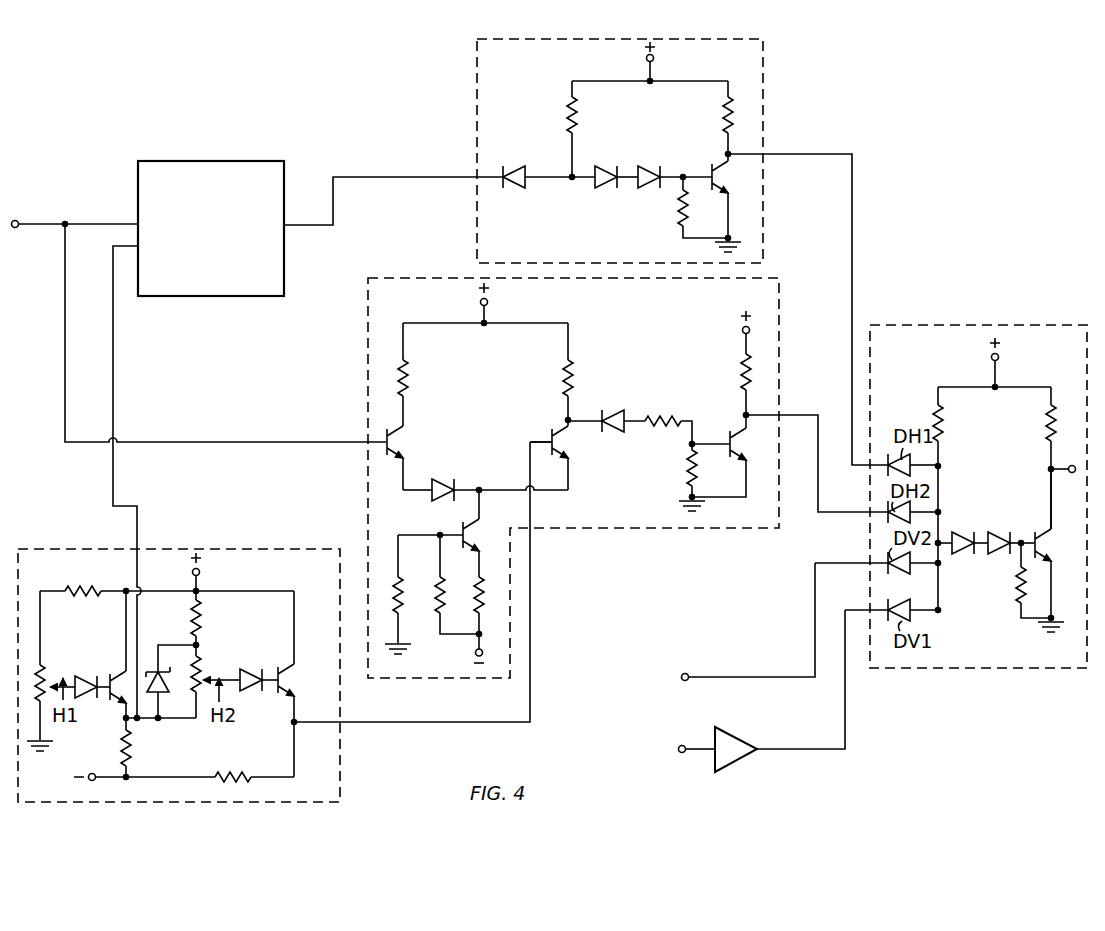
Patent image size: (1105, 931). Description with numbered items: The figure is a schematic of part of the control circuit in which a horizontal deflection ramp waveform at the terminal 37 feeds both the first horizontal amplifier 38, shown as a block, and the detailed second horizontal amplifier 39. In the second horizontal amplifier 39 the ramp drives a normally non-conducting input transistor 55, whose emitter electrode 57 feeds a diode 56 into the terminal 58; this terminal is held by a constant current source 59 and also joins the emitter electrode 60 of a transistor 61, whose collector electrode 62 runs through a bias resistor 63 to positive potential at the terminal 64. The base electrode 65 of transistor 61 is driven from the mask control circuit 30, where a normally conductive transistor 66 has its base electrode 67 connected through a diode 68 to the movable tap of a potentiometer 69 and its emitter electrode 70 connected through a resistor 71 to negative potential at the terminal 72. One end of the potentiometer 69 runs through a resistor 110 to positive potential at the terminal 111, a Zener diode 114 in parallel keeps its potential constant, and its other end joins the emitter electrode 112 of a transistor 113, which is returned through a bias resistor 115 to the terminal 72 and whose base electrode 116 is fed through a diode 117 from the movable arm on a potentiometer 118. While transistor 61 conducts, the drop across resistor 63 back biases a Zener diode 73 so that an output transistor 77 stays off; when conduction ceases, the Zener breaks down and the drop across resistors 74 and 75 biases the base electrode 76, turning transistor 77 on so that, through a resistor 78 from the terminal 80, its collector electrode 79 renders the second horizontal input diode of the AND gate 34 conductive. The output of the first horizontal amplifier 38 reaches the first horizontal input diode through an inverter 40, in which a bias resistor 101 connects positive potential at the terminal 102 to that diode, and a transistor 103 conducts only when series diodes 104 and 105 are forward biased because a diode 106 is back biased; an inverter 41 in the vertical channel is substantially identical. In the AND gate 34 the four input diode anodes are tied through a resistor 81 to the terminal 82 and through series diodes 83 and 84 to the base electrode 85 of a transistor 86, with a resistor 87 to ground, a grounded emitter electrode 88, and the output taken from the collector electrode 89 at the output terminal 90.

The mask control circuit 30 is at (213, 545).
The AND gate 34 is at (1008, 313).
The terminal 37 is at (66, 224).
The H1 amplifier 38 is at (225, 161).
The H2 amplifier 39 is at (441, 268).
The inverter 40 is at (475, 92).
The inverter 41 is at (732, 728).
The input transistor 55 is at (455, 441).
The diode 56 is at (447, 492).
The emitter electrode 57 is at (400, 455).
The terminal 58 is at (482, 493).
The constant current source 59 is at (443, 518).
The emitter electrode 60 is at (572, 456).
The transistor 61 is at (542, 433).
The collector electrode 62 is at (565, 432).
The bias resistor 63 is at (566, 378).
The terminal 64 is at (488, 302).
The base electrode 65 is at (540, 450).
The transistor 66 is at (286, 681).
The base electrode 67 is at (278, 668).
The diode 68 is at (254, 671).
The potentiometer 69 is at (200, 660).
The emitter electrode 70 is at (296, 694).
The resistor 71 is at (232, 778).
The terminal 72 is at (93, 781).
The Zener diode 73 is at (614, 408).
The resistor 74 is at (660, 414).
The resistor 75 is at (688, 470).
The base electrode 76 is at (742, 462).
The output transistor 77 is at (750, 443).
The resistor 78 is at (742, 370).
The collector electrode 79 is at (740, 425).
The terminal 80 is at (742, 330).
The resistor 81 is at (942, 417).
The terminal 82 is at (999, 357).
The diode 83 is at (958, 533).
The diode 84 is at (996, 556).
The base electrode 85 is at (1032, 540).
The transistor 86 is at (1082, 553).
The resistor 87 is at (1018, 597).
The emitter electrode 88 is at (1050, 560).
The collector electrode 89 is at (1050, 532).
The output terminal 90 is at (1080, 448).
The bias resistor 101 is at (722, 116).
The terminal 102 is at (654, 58).
The transistor 103 is at (735, 178).
The diode 104 is at (606, 188).
The diode 105 is at (652, 166).
The diode 106 is at (518, 166).
The resistor 110 is at (200, 612).
The terminal 111 is at (200, 572).
The emitter electrode 112 is at (126, 705).
The transistor 113 is at (106, 708).
The Zener diode 114 is at (155, 665).
The bias resistor 115 is at (129, 750).
The base electrode 116 is at (112, 674).
The diode 117 is at (84, 680).
The potentiometer 118 is at (44, 668).